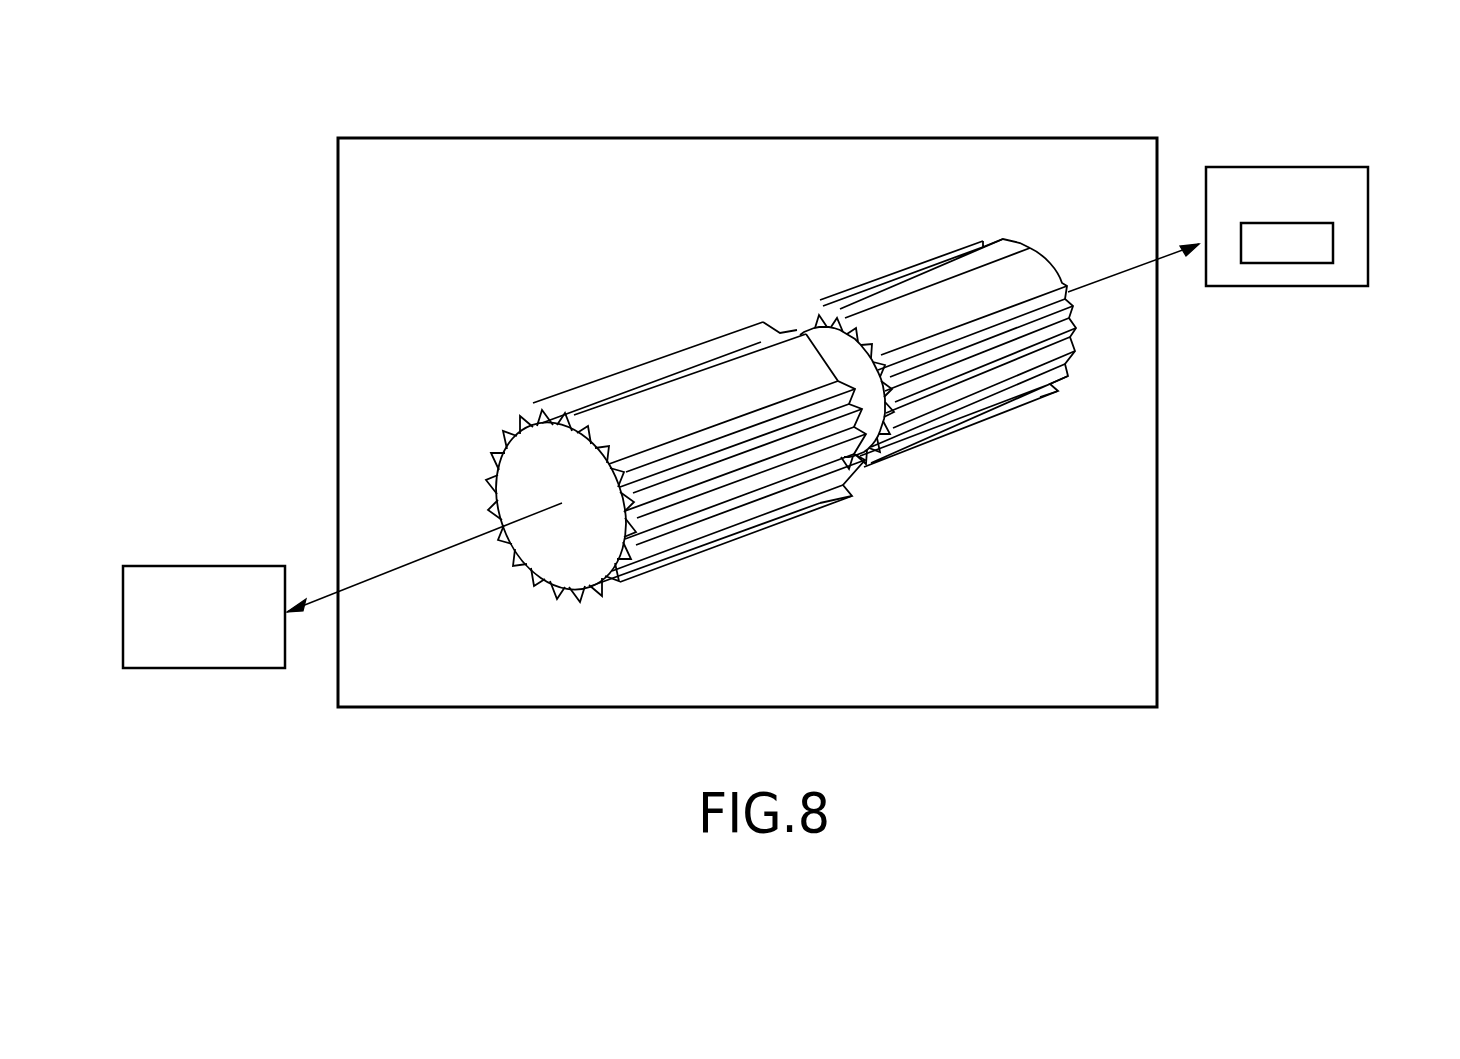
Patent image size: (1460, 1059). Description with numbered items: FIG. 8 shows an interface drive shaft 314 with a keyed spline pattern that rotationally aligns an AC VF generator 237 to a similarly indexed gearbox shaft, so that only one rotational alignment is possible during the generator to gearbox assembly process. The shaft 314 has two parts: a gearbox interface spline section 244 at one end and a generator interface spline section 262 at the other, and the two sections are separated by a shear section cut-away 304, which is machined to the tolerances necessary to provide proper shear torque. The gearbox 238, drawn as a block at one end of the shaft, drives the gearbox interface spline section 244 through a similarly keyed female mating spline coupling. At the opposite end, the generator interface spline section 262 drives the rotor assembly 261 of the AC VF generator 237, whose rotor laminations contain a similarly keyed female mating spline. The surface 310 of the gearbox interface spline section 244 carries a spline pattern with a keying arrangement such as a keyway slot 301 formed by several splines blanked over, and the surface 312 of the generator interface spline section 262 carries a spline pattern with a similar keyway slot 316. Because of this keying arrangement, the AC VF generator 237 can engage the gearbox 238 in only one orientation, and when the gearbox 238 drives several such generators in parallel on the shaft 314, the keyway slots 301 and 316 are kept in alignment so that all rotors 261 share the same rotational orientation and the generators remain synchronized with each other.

The shaft 314 is at (670, 137).
The gearbox interface spline section 244 is at (648, 476).
The generator interface spline section 262 is at (933, 360).
The keyway slot 301 is at (607, 437).
The surface 310 is at (699, 437).
The shear section cut-away 304 is at (833, 350).
The surface 312 is at (947, 255).
The keyway slot 316 is at (1052, 294).
The AC VF generator 237 is at (1326, 275).
The rotor assembly 261 is at (1333, 240).
The gearbox 238 is at (172, 566).